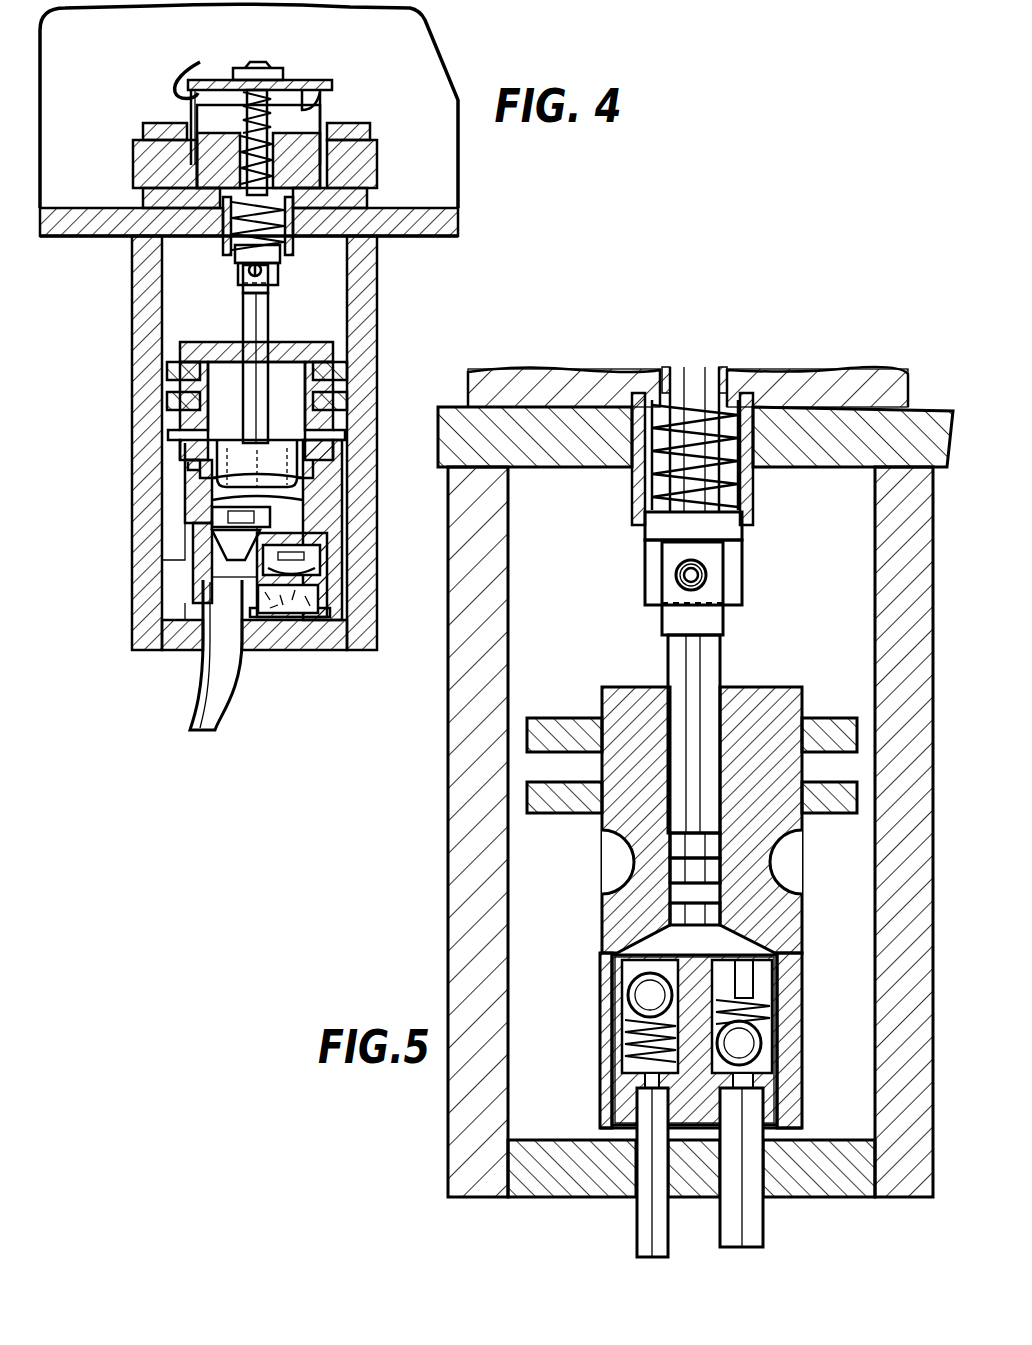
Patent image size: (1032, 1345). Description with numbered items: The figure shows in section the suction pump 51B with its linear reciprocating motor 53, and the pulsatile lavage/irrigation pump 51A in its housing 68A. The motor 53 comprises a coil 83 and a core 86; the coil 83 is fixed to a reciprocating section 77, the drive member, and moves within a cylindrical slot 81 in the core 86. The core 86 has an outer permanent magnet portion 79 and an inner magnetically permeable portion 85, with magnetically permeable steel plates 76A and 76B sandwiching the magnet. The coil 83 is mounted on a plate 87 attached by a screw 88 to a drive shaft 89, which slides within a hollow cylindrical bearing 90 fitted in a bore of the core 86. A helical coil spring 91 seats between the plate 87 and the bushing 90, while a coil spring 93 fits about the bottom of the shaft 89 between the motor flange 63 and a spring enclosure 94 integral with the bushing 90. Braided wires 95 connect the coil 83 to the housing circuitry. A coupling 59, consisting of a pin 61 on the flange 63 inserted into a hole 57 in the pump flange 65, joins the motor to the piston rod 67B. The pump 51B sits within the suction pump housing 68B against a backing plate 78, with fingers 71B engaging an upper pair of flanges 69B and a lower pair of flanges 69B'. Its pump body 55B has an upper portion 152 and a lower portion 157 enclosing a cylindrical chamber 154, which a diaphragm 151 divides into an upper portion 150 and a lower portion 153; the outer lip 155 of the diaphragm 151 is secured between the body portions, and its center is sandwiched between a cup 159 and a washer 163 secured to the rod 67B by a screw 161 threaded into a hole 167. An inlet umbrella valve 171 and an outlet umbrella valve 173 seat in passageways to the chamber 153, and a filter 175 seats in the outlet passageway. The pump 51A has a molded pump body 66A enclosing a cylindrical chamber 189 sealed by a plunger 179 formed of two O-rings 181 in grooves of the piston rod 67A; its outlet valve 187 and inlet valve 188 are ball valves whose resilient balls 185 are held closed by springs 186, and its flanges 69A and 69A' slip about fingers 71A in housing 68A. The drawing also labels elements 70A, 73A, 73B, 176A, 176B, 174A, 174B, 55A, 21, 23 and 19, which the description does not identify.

In FIG. 4, the braided wires 95 is at (196, 66).
In FIG. 4, the reciprocating section 77 is at (213, 76).
In FIG. 4, the screw 88 is at (253, 64).
In FIG. 4, the plate 87 is at (275, 78).
In FIG. 4, the helical coil spring 91 is at (285, 95).
In FIG. 4, the inner magnetically permeable portion 85 is at (190, 108).
In FIG. 4, the motor 53 is at (130, 135).
In FIG. 4, the coil 83 is at (305, 110).
In FIG. 4, the hollow cylindrical bearing 90 is at (238, 130).
In FIG. 4, the drive shaft 89 is at (270, 140).
In FIG. 4, the magnetically permeable steel plate 76A is at (357, 130).
In FIG. 4, the cylindrical slot 81 is at (170, 180).
In FIG. 4, the outer permanent magnet portion 79 is at (377, 160).
In FIG. 4, the core 86 is at (387, 178).
In FIG. 4, the magnetically permeable steel plate 76B is at (367, 200).
In FIG. 4, the suction pump housing 68B is at (140, 266).
In FIG. 4, the motor flange 63 is at (235, 254).
In FIG. 5, the motor flange 63 is at (735, 534).
In FIG. 4, the coil spring 93 is at (290, 242).
In FIG. 5, the coil spring 93 is at (750, 479).
In FIG. 4, the spring enclosure 94 is at (372, 240).
In FIG. 4, the backing plate 78 is at (365, 278).
In FIG. 4, the pump flange 65 is at (242, 284).
In FIG. 5, the pump flange 65 is at (675, 621).
In FIG. 4, the pin 61 is at (264, 272).
In FIG. 5, the pin 61 is at (706, 574).
In FIG. 4, the coupling 59 is at (284, 287).
In FIG. 5, the coupling 59 is at (632, 575).
In FIG. 4, the piston rod 67B is at (243, 320).
In FIG. 4, the hole 57 is at (257, 277).
In FIG. 5, the hole 57 is at (702, 590).
In FIG. 4, the upper portion of pump body 152 is at (180, 344).
In FIG. 4, the upper pair of flanges 69B is at (302, 386).
In FIG. 4, the fingers 71B is at (347, 366).
In FIG. 4, the lower fin 73B is at (347, 388).
In FIG. 4, the lower pair of flanges 69B' is at (304, 422).
In FIG. 4, the upper portion of chamber 150 is at (215, 386).
In FIG. 4, the cylindrical chamber 154 is at (180, 438).
In FIG. 4, the cup 159 is at (234, 450).
In FIG. 4, the threaded hole 167 is at (280, 450).
In FIG. 4, the pump body 55B is at (342, 456).
In FIG. 4, the outer lip 155 is at (198, 462).
In FIG. 4, the lower portion of pump body 157 is at (320, 494).
In FIG. 4, the diaphragm 151 is at (215, 478).
In FIG. 4, the screw 161 is at (290, 503).
In FIG. 4, the washer 163 is at (225, 510).
In FIG. 4, the lower portion of chamber 153 is at (290, 535).
In FIG. 4, the inlet umbrella valve 171 is at (225, 543).
In FIG. 4, the valve unit 176B is at (345, 549).
In FIG. 4, the lower housing 174B is at (182, 571).
In FIG. 4, the outlet umbrella valve 173 is at (300, 573).
In FIG. 4, the suction pump 51B is at (176, 595).
In FIG. 4, the filter 175 is at (300, 617).
In FIG. 4, the outlet tube 21 is at (220, 704).
In FIG. 5, the pulsatile lavage/irrigation pump 51A is at (810, 650).
In FIG. 5, the fin assembly 70A is at (582, 670).
In FIG. 5, the flanges 69A is at (734, 885).
In FIG. 5, the piston rod 67A is at (668, 660).
In FIG. 5, the fingers 71A is at (556, 718).
In FIG. 5, the fin 73A is at (800, 738).
In FIG. 5, the housing 68A is at (462, 738).
In FIG. 5, the plunger 179 is at (660, 847).
In FIG. 5, the O-rings 181 is at (722, 859).
In FIG. 5, the flanges 69A' is at (771, 883).
In FIG. 5, the cylindrical chamber 189 is at (690, 899).
In FIG. 5, the molded pump body 66A is at (790, 919).
In FIG. 5, the valve unit 176A is at (575, 974).
In FIG. 5, the springs 186 is at (772, 985).
In FIG. 5, the outlet valve 187 is at (620, 1002).
In FIG. 5, the inlet valve 188 is at (782, 1009).
In FIG. 5, the resilient balls 185 is at (766, 1040).
In FIG. 5, the valve block 55A is at (592, 1069).
In FIG. 5, the housing 174A is at (822, 1082).
In FIG. 5, the inlet tube 23 is at (640, 1234).
In FIG. 5, the outlet tube 19 is at (762, 1224).